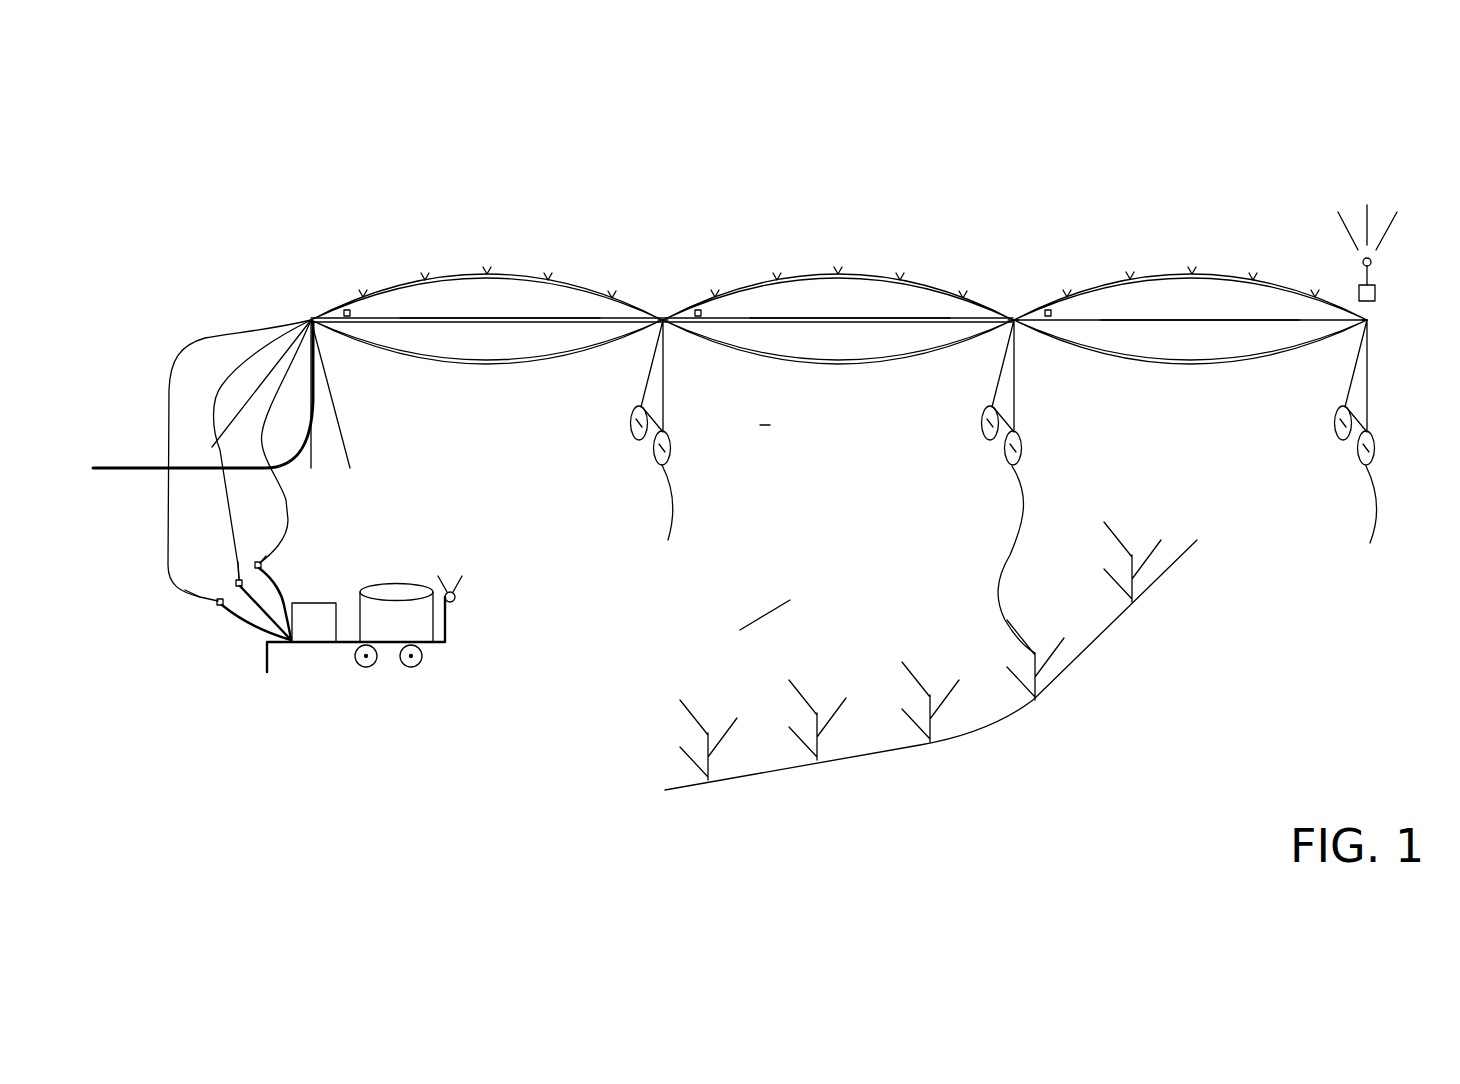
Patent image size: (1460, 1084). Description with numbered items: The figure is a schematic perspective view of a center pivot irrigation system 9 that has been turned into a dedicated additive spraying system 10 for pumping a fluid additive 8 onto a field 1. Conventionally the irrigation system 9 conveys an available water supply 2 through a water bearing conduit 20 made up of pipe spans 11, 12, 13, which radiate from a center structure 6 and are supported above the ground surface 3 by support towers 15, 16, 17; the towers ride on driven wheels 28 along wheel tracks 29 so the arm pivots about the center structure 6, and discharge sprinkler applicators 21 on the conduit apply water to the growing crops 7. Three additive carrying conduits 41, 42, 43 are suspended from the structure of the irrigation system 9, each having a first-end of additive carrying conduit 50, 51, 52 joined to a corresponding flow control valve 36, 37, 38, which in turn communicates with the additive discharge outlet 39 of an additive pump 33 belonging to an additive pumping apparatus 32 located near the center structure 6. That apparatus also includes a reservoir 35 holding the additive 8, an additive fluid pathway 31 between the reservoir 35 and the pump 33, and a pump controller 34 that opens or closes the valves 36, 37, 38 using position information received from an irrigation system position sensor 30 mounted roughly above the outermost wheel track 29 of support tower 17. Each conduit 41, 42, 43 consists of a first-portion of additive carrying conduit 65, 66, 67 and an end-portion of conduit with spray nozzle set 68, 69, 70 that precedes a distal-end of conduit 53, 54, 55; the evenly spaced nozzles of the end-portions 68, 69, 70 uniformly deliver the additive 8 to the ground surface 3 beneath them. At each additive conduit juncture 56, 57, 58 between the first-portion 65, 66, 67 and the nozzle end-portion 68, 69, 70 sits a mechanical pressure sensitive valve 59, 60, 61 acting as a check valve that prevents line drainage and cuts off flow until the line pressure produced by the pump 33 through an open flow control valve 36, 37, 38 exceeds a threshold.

The field 1 is at (931, 665).
The available water supply 2 is at (158, 467).
The ground surface 3 is at (765, 612).
The center structure 6 is at (337, 420).
The growing crops 7 is at (1113, 533).
The fluid additive 8 is at (408, 610).
The irrigation system 9 is at (812, 267).
The dedicated additive spraying system 10 is at (765, 425).
The pipe span 11 is at (486, 366).
The pipe span 12 is at (838, 366).
The outermost pipe span 13 is at (1190, 366).
The support tower 15 is at (663, 408).
The support tower 16 is at (1017, 403).
The support tower 17 is at (1368, 390).
The water bearing conduit 20 is at (395, 290).
The discharge sprinkler applicators 21 is at (777, 278).
The wheels 28 is at (655, 460).
The wheel tracks 29 is at (673, 503).
The irrigation system position sensor 30 is at (1378, 290).
The additive fluid pathway 31 is at (378, 638).
The additive pumping apparatus 32 is at (387, 657).
The additive pump 33 is at (320, 630).
The pump controller 34 is at (321, 603).
The reservoir 35 is at (396, 588).
The flow control valve 36 is at (216, 604).
The flow control valve 37 is at (238, 589).
The flow control valve 38 is at (263, 566).
The additive discharge outlet 39 is at (292, 643).
The additive carrying conduit 41 is at (168, 520).
The additive carrying conduit 42 is at (236, 537).
The additive carrying conduit 43 is at (283, 498).
The first-end of additive carrying conduit 50 is at (197, 597).
The first-end of additive carrying conduit 51 is at (241, 565).
The first-end of additive carrying conduit 52 is at (263, 560).
The distal-end of conduit 53 is at (643, 314).
The distal-end of conduit 54 is at (1012, 317).
The distal-end of conduit 55 is at (1367, 323).
The additive conduit juncture 56 is at (377, 350).
The additive conduit juncture 57 is at (720, 350).
The additive conduit juncture 58 is at (1070, 350).
The mechanical pressure sensitive valve 59 is at (352, 320).
The mechanical pressure sensitive valve 60 is at (698, 320).
The mechanical pressure sensitive valve 61 is at (1048, 320).
The first-portion of additive carrying conduit 65 is at (281, 326).
The first-portion of additive carrying conduit 66 is at (233, 363).
The first-portion of additive carrying conduit 67 is at (287, 378).
The end-portion of conduit with spray nozzle set 68 is at (507, 318).
The end-portion of conduit with spray nozzle set 69 is at (862, 318).
The end-portion of conduit with spray nozzle set 70 is at (1180, 318).